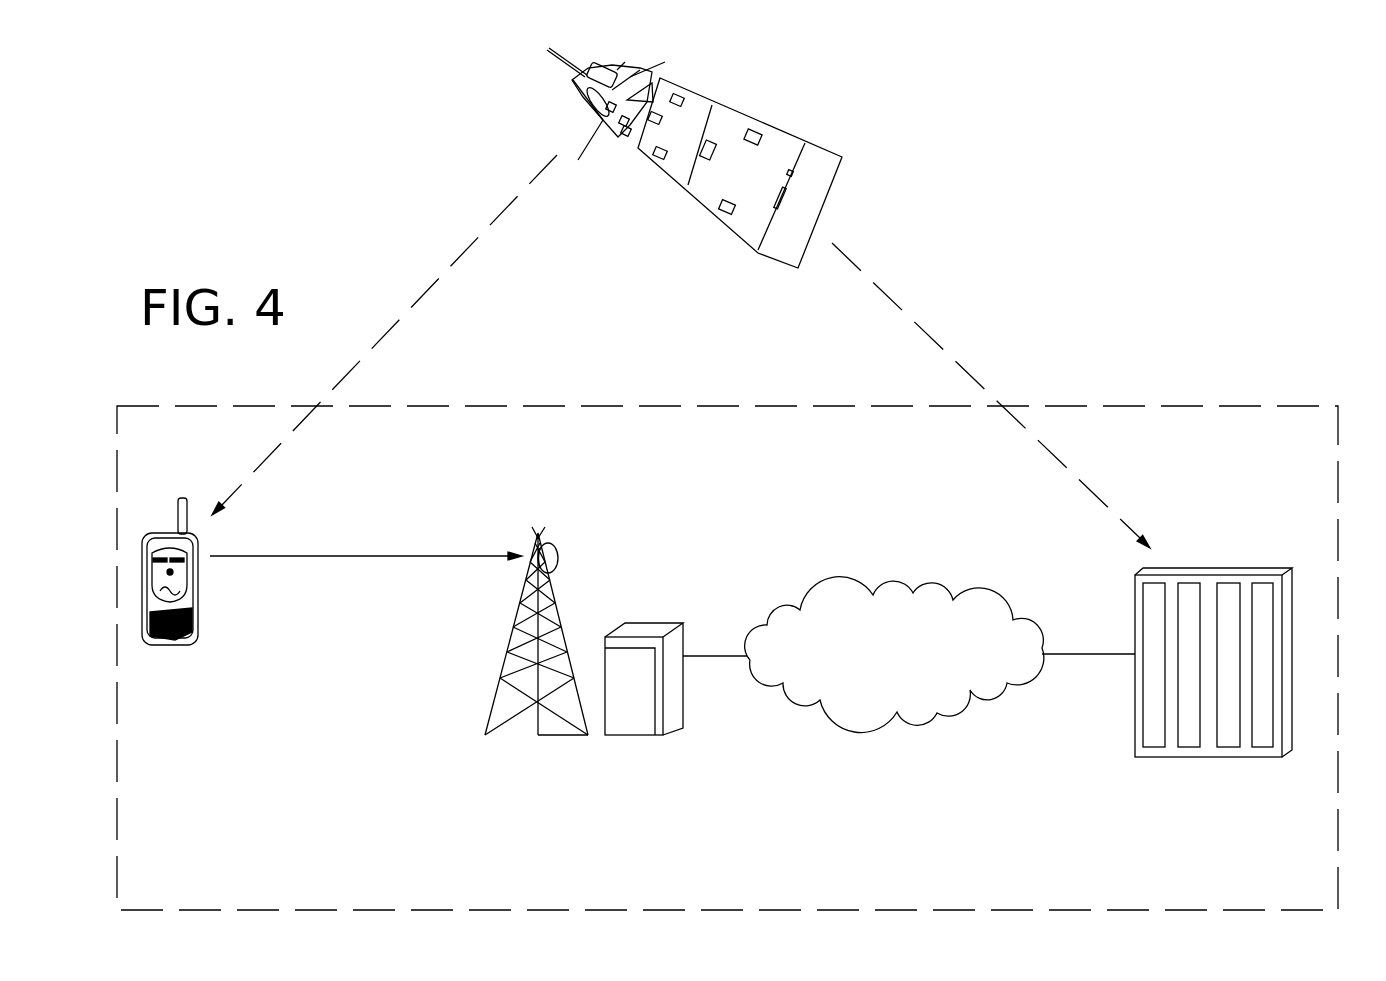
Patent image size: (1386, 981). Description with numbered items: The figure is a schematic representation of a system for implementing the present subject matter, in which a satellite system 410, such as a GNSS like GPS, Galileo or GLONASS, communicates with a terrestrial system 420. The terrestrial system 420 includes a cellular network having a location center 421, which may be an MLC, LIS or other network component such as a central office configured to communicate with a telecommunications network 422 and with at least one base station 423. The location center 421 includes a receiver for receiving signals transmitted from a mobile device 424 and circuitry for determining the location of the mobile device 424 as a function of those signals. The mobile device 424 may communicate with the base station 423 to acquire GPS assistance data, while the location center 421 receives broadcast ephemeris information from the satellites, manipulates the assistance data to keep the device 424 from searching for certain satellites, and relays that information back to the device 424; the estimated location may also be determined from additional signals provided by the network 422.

The satellite system 410 is at (868, 208).
The terrestrial system 420 is at (1162, 406).
The location center 421 is at (1197, 552).
The telecommunications network 422 is at (857, 587).
The base station 423 is at (557, 533).
The mobile device 424 is at (163, 528).